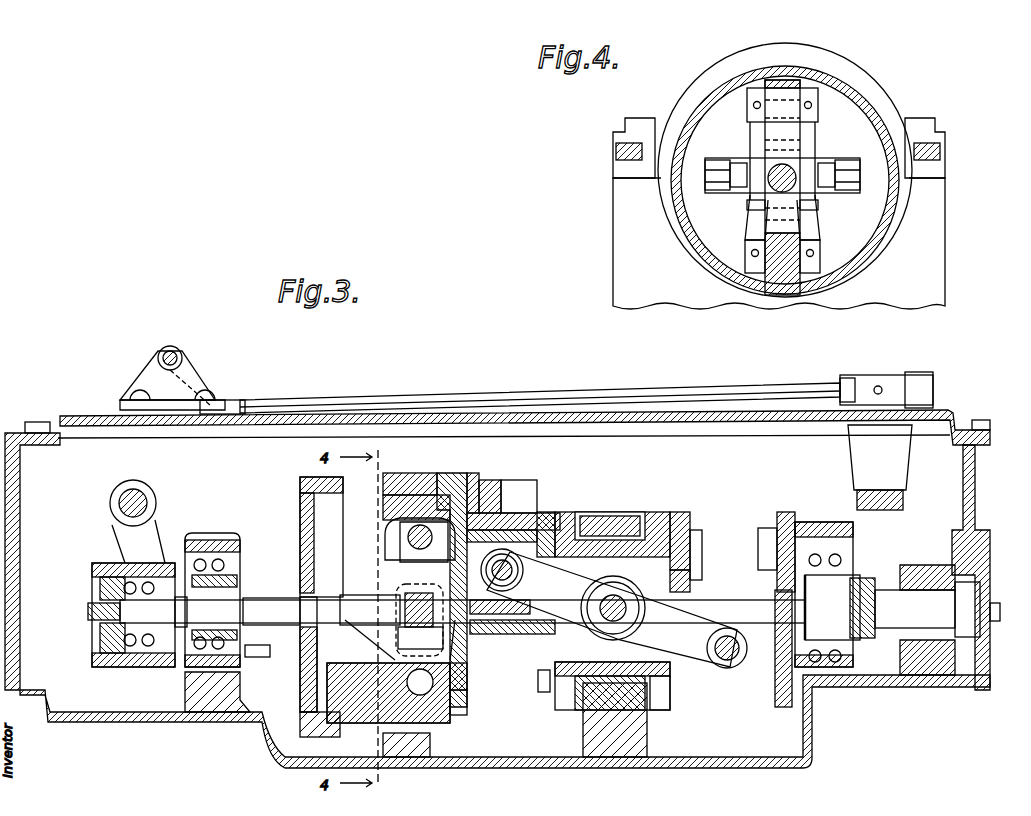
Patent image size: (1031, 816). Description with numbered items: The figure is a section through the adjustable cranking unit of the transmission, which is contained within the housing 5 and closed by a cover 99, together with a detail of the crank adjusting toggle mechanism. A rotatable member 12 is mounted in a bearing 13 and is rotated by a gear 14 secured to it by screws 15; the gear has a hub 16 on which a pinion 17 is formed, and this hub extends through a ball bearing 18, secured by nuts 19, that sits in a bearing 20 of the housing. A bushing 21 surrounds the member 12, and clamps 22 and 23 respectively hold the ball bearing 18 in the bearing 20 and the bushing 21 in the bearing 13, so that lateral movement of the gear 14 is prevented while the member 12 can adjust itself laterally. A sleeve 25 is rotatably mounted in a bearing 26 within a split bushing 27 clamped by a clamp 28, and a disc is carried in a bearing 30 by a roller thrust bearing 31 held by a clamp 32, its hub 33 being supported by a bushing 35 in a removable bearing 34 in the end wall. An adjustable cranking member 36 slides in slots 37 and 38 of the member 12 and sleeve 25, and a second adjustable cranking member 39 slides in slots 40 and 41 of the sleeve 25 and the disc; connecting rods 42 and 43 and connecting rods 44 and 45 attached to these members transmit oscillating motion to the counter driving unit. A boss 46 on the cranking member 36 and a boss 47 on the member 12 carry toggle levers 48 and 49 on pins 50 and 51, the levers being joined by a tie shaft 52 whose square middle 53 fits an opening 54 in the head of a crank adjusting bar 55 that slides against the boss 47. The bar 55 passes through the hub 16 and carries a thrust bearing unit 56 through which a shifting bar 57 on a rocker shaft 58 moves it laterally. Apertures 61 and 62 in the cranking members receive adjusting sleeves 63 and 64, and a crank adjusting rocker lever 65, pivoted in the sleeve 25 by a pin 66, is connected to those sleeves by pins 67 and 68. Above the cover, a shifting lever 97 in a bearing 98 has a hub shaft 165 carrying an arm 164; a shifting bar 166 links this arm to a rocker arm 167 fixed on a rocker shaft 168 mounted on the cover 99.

In FIG. 3, the housing 5 is at (560, 768).
In FIG. 4, the rotatable member 12 is at (875, 205).
In FIG. 3, the rotatable member 12 is at (452, 473).
In FIG. 4, the bearing 13 is at (938, 243).
In FIG. 3, the bearing 13 is at (410, 757).
In FIG. 3, the gear 14 is at (305, 737).
In FIG. 3, the screws 15 is at (300, 565).
In FIG. 3, the hub 16 is at (300, 640).
In FIG. 3, the pinion 17 is at (258, 657).
In FIG. 3, the ball bearing 18 is at (208, 575).
In FIG. 3, the nuts 19 is at (180, 595).
In FIG. 3, the bearing 20 is at (185, 688).
In FIG. 4, the bushing 21 is at (888, 225).
In FIG. 3, the bushing 21 is at (435, 723).
In FIG. 3, the clamp 22 is at (225, 533).
In FIG. 4, the clamp 23 is at (888, 98).
In FIG. 3, the clamp 23 is at (395, 473).
In FIG. 3, the sleeve 25 is at (568, 512).
In FIG. 3, the bearing 26 is at (583, 735).
In FIG. 3, the split bushing 27 is at (680, 512).
In FIG. 3, the clamp 28 is at (610, 512).
In FIG. 3, the bearing 30 is at (862, 662).
In FIG. 3, the roller thrust bearing 31 is at (835, 668).
In FIG. 3, the clamp 32 is at (820, 522).
In FIG. 3, the hub 33 is at (890, 633).
In FIG. 3, the removable bearing 34 is at (905, 565).
In FIG. 3, the bushing 35 is at (928, 655).
In FIG. 3, the adjustable cranking member 36 is at (479, 485).
In FIG. 3, the slot 37 is at (467, 728).
In FIG. 3, the slot 38 is at (538, 690).
In FIG. 3, the second adjustable cranking member 39 is at (690, 578).
In FIG. 3, the slot 40 is at (692, 532).
In FIG. 3, the slot 41 is at (766, 528).
In FIG. 3, the connecting rod 42 is at (490, 480).
In FIG. 3, the connecting rod 43 is at (520, 480).
In FIG. 3, the connecting rod 44 is at (700, 710).
In FIG. 3, the connecting rod 45 is at (740, 707).
In FIG. 4, the boss 46 is at (800, 112).
In FIG. 3, the boss 46 is at (420, 495).
In FIG. 4, the boss 47 is at (792, 270).
In FIG. 3, the boss 47 is at (440, 690).
In FIG. 4, the toggle lever 48 is at (812, 128).
In FIG. 3, the toggle lever 48 is at (400, 567).
In FIG. 4, the toggle lever 49 is at (745, 222).
In FIG. 3, the toggle lever 49 is at (455, 655).
In FIG. 4, the pin 50 is at (818, 108).
In FIG. 3, the pin 50 is at (470, 530).
In FIG. 4, the pin 51 is at (820, 255).
In FIG. 3, the pin 51 is at (467, 712).
In FIG. 4, the tie shaft 52 is at (805, 160).
In FIG. 4, the square portion of tie shaft 53 is at (790, 195).
In FIG. 3, the square portion of tie shaft 53 is at (405, 630).
In FIG. 3, the opening 54 is at (440, 640).
In FIG. 4, the crank adjusting bar 55 is at (770, 168).
In FIG. 3, the crank adjusting bar 55 is at (300, 590).
In FIG. 3, the thrust bearing unit 56 is at (115, 667).
In FIG. 3, the shifting bar 57 is at (115, 540).
In FIG. 3, the rocker shaft 58 is at (113, 492).
In FIG. 3, the aperture 61 is at (546, 512).
In FIG. 3, the aperture 62 is at (782, 707).
In FIG. 3, the adjusting sleeve 63 is at (480, 545).
In FIG. 3, the adjusting sleeve 64 is at (660, 710).
In FIG. 3, the crank adjusting rocker lever 65 is at (612, 609).
In FIG. 3, the pin 66 is at (600, 616).
In FIG. 3, the pin 67 is at (513, 570).
In FIG. 3, the pin 68 is at (715, 648).
In FIG. 3, the shifting lever 97 is at (903, 500).
In FIG. 3, the bearing 98 is at (906, 455).
In FIG. 3, the cover 99 is at (680, 412).
In FIG. 3, the arm 164 is at (858, 375).
In FIG. 3, the hub shaft 165 is at (880, 378).
In FIG. 3, the shifting bar 166 is at (612, 388).
In FIG. 3, the rocker arm 167 is at (200, 388).
In FIG. 3, the rocker shaft 168 is at (182, 355).